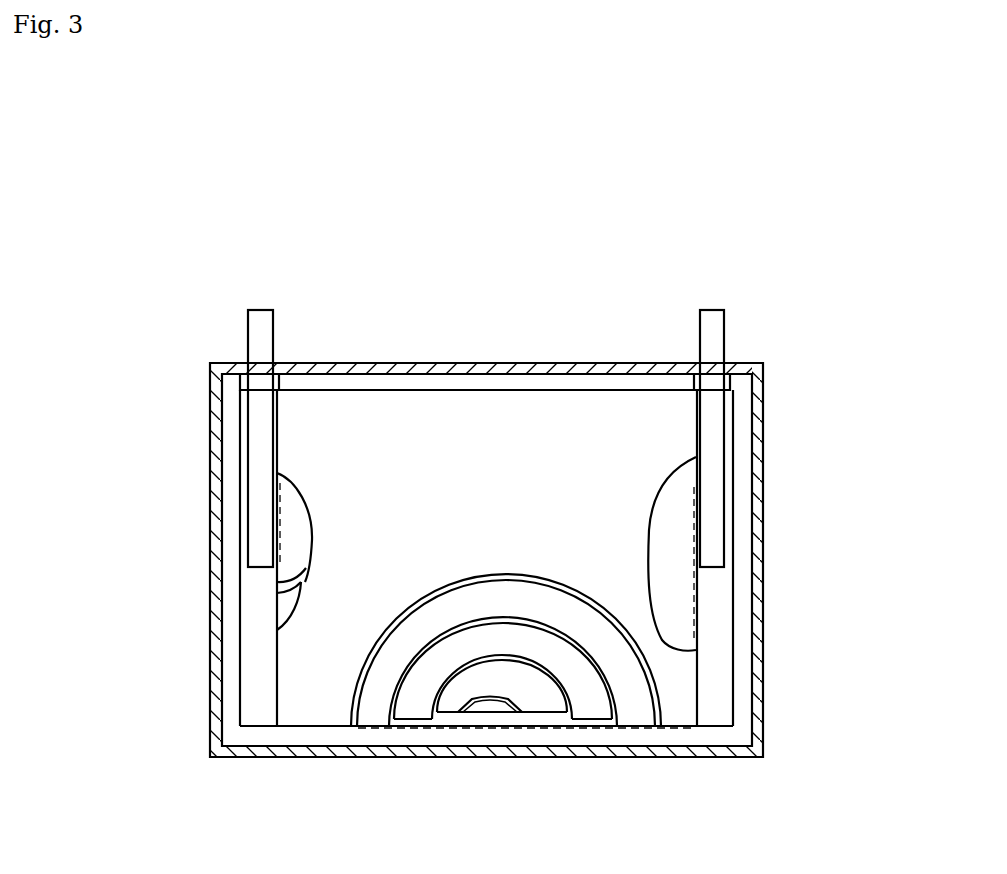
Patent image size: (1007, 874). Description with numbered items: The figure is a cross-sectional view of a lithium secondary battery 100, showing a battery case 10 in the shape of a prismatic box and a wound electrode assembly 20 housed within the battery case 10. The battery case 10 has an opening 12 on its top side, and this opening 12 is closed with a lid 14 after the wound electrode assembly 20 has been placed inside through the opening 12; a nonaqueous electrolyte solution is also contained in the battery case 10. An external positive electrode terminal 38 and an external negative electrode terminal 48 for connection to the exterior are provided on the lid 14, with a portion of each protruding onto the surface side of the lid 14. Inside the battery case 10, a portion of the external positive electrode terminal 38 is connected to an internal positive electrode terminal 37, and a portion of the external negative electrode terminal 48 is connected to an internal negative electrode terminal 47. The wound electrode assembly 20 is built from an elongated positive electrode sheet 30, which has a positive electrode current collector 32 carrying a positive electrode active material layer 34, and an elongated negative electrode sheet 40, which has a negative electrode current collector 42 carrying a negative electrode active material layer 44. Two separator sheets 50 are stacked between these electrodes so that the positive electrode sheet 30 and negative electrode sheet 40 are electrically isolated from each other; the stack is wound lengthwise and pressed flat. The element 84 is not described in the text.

The lithium secondary battery 100 is at (781, 258).
The battery case 10 is at (764, 470).
The opening 12 is at (488, 385).
The lid 14 is at (660, 362).
The wound electrode assembly 20 is at (373, 418).
The positive electrode sheet 30 is at (452, 707).
The positive electrode current collector 32 is at (257, 702).
The positive electrode active material layer 34 is at (300, 527).
The internal positive electrode terminal 37 is at (262, 450).
The external positive electrode terminal 38 is at (259, 310).
The negative electrode sheet 40 is at (277, 618).
The negative electrode current collector 42 is at (716, 702).
The negative electrode active material layer 44 is at (292, 605).
The internal negative electrode terminal 47 is at (706, 437).
The external negative electrode terminal 48 is at (711, 310).
The separator sheet 50 is at (277, 583).
The case bottom wall 84 is at (764, 732).